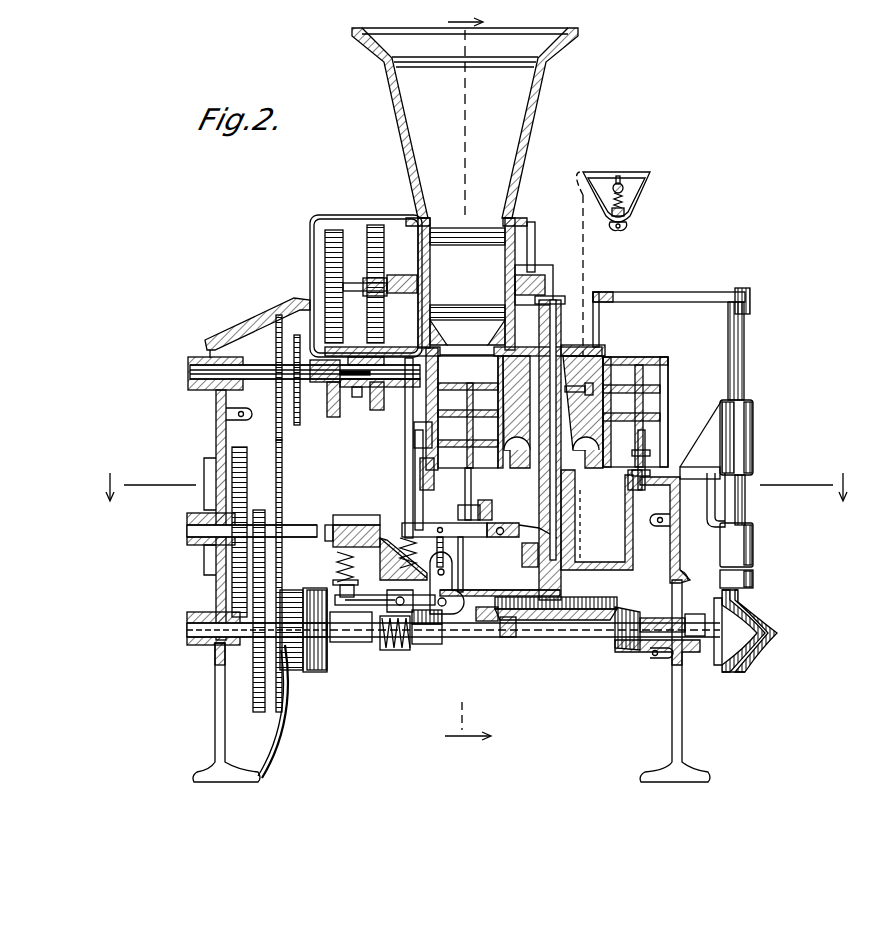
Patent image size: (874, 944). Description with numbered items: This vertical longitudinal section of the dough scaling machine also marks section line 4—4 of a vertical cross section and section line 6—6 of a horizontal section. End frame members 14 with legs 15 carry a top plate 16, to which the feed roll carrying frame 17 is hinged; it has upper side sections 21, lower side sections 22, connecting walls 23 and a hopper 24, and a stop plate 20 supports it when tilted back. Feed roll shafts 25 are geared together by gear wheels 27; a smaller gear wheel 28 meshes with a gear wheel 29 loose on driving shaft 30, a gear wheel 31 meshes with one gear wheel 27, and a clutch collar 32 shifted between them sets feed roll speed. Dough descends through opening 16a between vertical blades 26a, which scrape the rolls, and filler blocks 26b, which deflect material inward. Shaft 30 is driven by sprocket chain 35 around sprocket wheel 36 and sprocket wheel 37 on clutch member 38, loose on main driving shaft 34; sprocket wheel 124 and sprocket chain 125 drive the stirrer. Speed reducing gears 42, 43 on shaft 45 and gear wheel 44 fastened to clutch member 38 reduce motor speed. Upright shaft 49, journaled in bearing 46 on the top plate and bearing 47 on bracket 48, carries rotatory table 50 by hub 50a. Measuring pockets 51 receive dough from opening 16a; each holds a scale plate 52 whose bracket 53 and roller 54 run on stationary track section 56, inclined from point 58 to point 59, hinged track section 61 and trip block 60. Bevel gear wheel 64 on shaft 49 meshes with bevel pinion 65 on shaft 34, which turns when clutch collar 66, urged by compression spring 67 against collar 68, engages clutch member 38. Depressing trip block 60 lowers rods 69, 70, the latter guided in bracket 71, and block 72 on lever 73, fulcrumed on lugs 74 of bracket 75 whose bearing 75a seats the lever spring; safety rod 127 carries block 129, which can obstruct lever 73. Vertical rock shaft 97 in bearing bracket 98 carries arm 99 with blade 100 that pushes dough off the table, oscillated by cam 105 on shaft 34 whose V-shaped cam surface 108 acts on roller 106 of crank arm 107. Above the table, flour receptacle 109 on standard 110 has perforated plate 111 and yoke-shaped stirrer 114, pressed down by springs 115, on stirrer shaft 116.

The section line 4— 4 is at (468, 379).
The section line 6— 6 is at (466, 487).
The hopper 24 is at (536, 100).
The walls 23 is at (338, 214).
The gear wheel 28 is at (332, 228).
The gear wheels 27 is at (377, 224).
The feed roll shafts 25 is at (345, 285).
The sprocket wheel 124 is at (296, 335).
The sprocket chain 125 is at (297, 395).
The sprocket wheel 36 is at (262, 325).
The driving shaft 30 is at (188, 370).
The end frame members 14 is at (217, 405).
The speed reducing gear wheel 42 is at (230, 458).
The speed reducing gear wheel 43 is at (255, 512).
The shaft 45 is at (188, 528).
The speed reducing gear wheel 44 is at (235, 575).
The legs 15 is at (451, 681).
The upper side sections 21 is at (428, 250).
The stop plate 20 is at (470, 238).
The lower side sections 22 is at (430, 320).
The filler blocks 26b is at (470, 320).
The vertical blades 26a is at (467, 337).
The opening 16a is at (463, 407).
The stirrer shaft 116 is at (600, 200).
The yoke-shaped stirrer 114 is at (622, 183).
The springs 115 is at (630, 196).
The flour receptacle 109 is at (636, 210).
The perforated plate 111 is at (628, 222).
The feed roll carrying frame 17 is at (520, 265).
The standard 110 is at (590, 272).
The arm 99 is at (700, 294).
The bearing 46 is at (562, 326).
The blade 100 is at (598, 340).
The top plate 16 is at (572, 356).
The scale plate 52 is at (655, 356).
The measuring pockets 51 is at (660, 380).
The rotatory table 50 is at (660, 398).
The upright shaft 49 is at (648, 418).
The vertical rock shaft 97 is at (746, 382).
The hub 50a is at (735, 445).
The brackets 53 is at (466, 478).
The bearing bracket 98 is at (756, 462).
The rollers 54 is at (482, 505).
The point 59 is at (655, 516).
The bearing 47 is at (597, 520).
The stationary track section 56 is at (672, 555).
The track section 61 is at (504, 528).
The point 58 is at (520, 545).
The trip block 60 is at (462, 545).
The rod 69 is at (470, 585).
The bracket 48 is at (550, 545).
The bevel gear wheel 64 is at (590, 616).
The bevel pinion 65 is at (630, 640).
The main driving shaft 34 is at (548, 642).
The lever 73 is at (448, 622).
The block 72 is at (440, 618).
The collar 68 is at (418, 628).
The coiled compression spring 67 is at (374, 642).
The clutch collar 66 is at (322, 668).
The block 129 is at (400, 655).
The clutch member 38 is at (294, 668).
The sprocket wheel 37 is at (286, 700).
The sprocket chain 35 is at (283, 558).
The lugs 74 is at (403, 559).
The bracket 75 is at (378, 548).
The bearing 75a is at (345, 516).
The rod 70 is at (416, 497).
The vertical rod 127 is at (408, 476).
The bracket 71 is at (412, 445).
The clutch collar 32 is at (360, 395).
The gear wheel 31 is at (382, 410).
The gear wheel 29 is at (335, 420).
The crank arm 107 is at (756, 583).
The roller 106 is at (756, 606).
The V-shaped cam surface 108 is at (774, 636).
The cam 105 is at (748, 664).